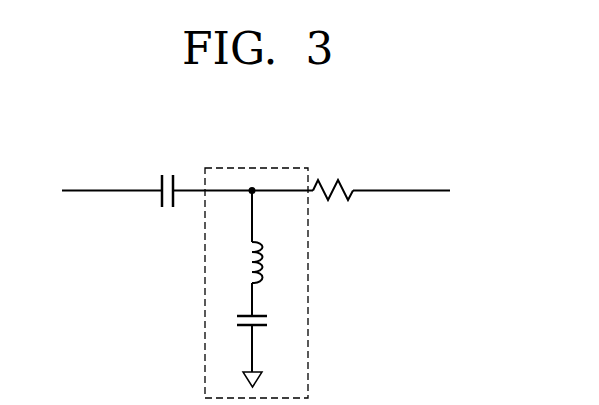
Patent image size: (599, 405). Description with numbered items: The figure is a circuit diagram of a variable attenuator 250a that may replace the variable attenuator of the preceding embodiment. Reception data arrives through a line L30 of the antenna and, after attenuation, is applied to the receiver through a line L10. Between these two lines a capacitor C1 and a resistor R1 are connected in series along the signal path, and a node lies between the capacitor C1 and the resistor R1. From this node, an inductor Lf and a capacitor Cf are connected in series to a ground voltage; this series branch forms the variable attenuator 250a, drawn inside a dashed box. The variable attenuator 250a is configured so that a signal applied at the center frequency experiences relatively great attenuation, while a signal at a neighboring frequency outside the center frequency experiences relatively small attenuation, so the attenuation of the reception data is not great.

The line L10 is at (89, 190).
The capacitor C1 is at (167, 178).
The variable attenuator 250a is at (265, 167).
The resistor R1 is at (333, 176).
The line L30 is at (432, 190).
The inductor Lf is at (269, 237).
The capacitor Cf is at (265, 335).